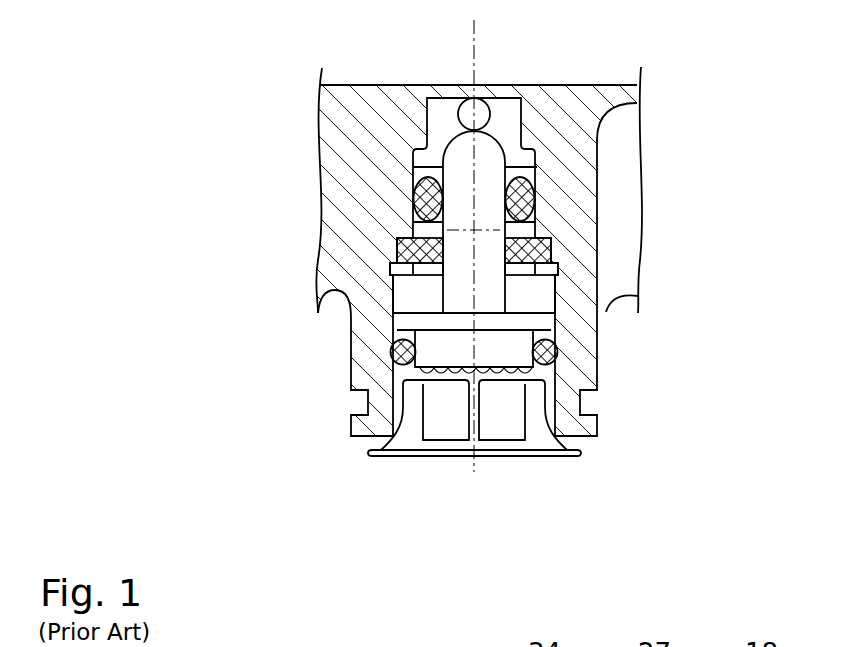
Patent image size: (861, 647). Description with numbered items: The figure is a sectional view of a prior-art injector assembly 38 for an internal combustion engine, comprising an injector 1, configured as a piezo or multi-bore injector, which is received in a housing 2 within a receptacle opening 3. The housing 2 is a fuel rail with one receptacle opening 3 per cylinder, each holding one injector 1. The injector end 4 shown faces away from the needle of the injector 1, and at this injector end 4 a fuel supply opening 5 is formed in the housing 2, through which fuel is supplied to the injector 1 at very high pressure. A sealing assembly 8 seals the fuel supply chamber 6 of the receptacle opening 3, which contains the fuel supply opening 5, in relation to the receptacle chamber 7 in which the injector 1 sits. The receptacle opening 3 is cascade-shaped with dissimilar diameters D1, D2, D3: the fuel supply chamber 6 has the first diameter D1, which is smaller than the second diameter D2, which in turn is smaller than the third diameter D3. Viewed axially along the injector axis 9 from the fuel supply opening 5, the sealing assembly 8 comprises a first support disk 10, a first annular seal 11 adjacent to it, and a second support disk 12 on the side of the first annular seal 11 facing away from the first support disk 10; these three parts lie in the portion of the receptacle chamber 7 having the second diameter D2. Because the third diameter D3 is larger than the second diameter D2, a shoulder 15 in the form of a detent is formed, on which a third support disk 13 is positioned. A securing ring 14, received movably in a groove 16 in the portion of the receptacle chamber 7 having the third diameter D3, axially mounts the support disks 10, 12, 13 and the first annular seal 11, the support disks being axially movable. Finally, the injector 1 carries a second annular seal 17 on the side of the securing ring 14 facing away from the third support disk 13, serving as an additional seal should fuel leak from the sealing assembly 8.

The injector 1 is at (648, 67).
The injector assembly 38 is at (535, 156).
The housing 2 is at (543, 120).
The receptacle opening 3 is at (438, 113).
The injector end 4 is at (492, 85).
The fuel supply opening 5 is at (482, 113).
The fuel supply chamber 6 is at (510, 113).
The receptacle chamber 7 is at (412, 293).
The sealing assembly 8 is at (296, 216).
The injector axis 9 is at (475, 460).
The first support disk 10 is at (530, 167).
The first annular seal 11 is at (522, 199).
The second support disk 12 is at (520, 231).
The third support disk 13 is at (537, 252).
The securing ring 14 is at (543, 269).
The shoulder 15 is at (389, 245).
The groove 16 is at (392, 272).
The second annular seal 17 is at (397, 357).
The first diameter D1 is at (518, 130).
The second diameter D2 is at (533, 172).
The third diameter D3 is at (397, 322).